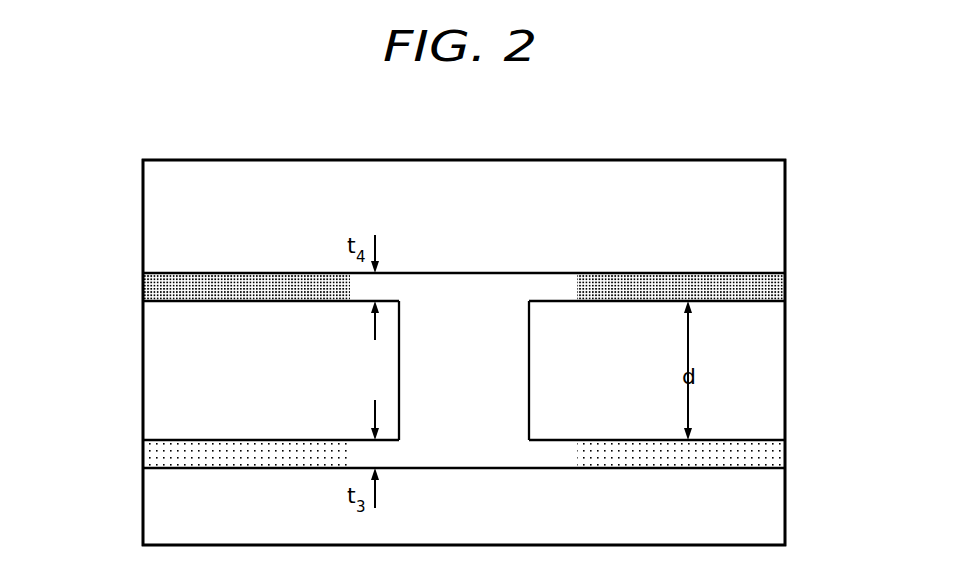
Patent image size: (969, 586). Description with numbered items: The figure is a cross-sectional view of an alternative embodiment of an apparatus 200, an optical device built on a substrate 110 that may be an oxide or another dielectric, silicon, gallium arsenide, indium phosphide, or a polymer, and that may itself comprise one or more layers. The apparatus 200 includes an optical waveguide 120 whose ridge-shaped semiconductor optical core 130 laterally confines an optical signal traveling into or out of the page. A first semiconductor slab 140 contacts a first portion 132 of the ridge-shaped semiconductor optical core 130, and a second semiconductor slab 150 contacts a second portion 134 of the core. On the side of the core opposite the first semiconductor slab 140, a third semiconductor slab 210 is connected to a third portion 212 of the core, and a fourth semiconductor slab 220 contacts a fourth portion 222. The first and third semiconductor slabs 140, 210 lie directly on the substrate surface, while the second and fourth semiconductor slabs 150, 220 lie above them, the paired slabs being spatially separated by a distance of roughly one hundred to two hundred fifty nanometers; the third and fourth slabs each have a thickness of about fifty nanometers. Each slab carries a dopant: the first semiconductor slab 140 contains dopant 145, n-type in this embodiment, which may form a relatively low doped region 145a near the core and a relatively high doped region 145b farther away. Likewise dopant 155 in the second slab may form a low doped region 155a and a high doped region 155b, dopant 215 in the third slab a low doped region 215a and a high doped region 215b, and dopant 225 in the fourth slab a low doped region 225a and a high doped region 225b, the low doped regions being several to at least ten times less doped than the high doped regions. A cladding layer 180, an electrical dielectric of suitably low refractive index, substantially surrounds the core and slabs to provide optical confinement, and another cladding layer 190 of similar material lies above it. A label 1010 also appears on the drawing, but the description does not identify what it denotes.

The apparatus 200 is at (712, 130).
The device structure 1010 is at (123, 172).
The cladding layer 190 is at (143, 227).
The cladding layer 180 is at (143, 380).
The substrate 110 is at (143, 510).
The fourth semiconductor slab 220 is at (143, 288).
The second semiconductor slab 150 is at (785, 288).
The third semiconductor slab 210 is at (143, 455).
The first semiconductor slab 140 is at (785, 455).
The dopant 225 is at (263, 273).
The relatively low doped region 225a is at (340, 287).
The relatively high doped region 225b is at (212, 287).
The dopant 155 is at (665, 275).
The relatively low doped region 155a is at (586, 287).
The relatively high doped region 155b is at (716, 287).
The dopant 215 is at (263, 469).
The relatively low doped region 215a is at (340, 457).
The relatively high doped region 215b is at (213, 457).
The dopant 145 is at (665, 469).
The relatively low doped region 145a is at (586, 455).
The relatively high doped region 145b is at (716, 455).
The optical waveguide 120 is at (386, 370).
The ridge-shaped semiconductor optical core 130 is at (532, 362).
The fourth portion 222 is at (402, 299).
The second portion 134 is at (526, 299).
The third portion 212 is at (402, 442).
The first portion 132 is at (526, 442).